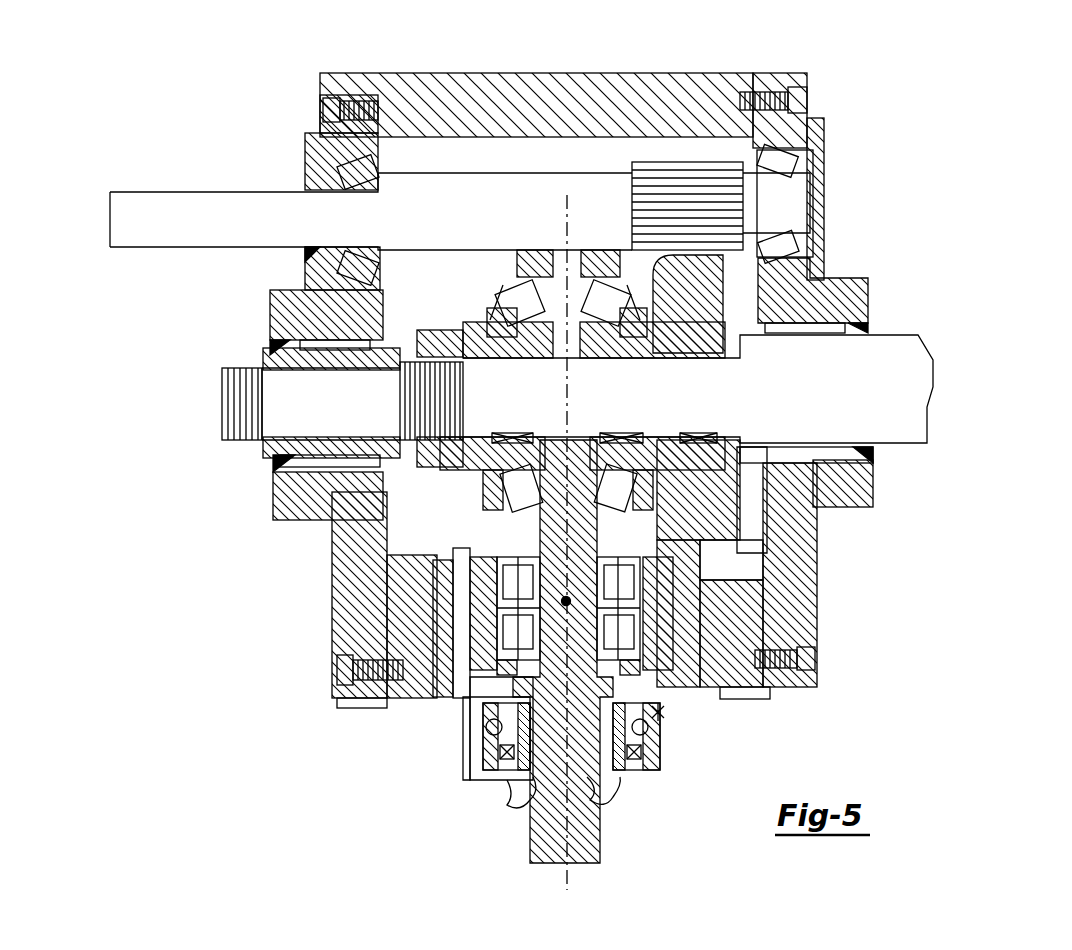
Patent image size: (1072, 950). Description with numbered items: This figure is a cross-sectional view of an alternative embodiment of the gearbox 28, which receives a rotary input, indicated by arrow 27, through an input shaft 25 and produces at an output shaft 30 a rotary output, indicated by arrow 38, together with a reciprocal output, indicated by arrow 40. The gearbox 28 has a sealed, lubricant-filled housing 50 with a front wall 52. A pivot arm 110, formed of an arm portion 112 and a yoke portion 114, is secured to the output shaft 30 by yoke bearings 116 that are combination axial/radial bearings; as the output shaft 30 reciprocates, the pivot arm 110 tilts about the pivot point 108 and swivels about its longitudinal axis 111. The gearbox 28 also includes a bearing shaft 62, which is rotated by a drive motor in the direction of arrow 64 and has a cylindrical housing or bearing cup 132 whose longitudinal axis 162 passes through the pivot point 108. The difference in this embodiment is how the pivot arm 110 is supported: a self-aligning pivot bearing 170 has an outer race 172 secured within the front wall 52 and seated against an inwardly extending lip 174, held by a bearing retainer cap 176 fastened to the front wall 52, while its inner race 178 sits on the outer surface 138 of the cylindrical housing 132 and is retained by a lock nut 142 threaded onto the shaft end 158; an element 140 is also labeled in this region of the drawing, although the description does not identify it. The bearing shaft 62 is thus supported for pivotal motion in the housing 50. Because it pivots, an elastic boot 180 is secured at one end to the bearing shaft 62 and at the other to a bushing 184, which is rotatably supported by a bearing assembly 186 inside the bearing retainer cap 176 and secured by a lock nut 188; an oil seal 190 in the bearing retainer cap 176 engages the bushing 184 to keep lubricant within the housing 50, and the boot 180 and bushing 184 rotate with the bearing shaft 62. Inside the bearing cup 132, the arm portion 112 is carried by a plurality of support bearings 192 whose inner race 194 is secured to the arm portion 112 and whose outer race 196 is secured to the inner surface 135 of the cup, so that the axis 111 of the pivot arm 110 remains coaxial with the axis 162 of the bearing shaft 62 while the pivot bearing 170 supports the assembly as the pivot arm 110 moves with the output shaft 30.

The input shaft 25 is at (230, 192).
The arrow indicating rotary input 27 is at (138, 270).
The gearbox 28 is at (827, 74).
The output shaft 30 is at (895, 350).
The arrow indicating rotary motion 38 is at (891, 478).
The arrow indicating reciprocal motion 40 is at (742, 387).
The housing 50 is at (769, 68).
The front wall 52 is at (400, 690).
The bearing shaft 62 is at (592, 820).
The arrow indicating rotation of bearing shaft 64 is at (560, 862).
The pivot point 108 is at (566, 598).
The pivot arm 110 is at (626, 530).
The longitudinal axis of pivot arm 111 is at (591, 470).
The arm portion 112 is at (652, 437).
The yoke portion 114 is at (543, 260).
The yoke bearings 116 is at (496, 298).
The cylindrical housing or bearing cup 132 is at (483, 700).
The inner surface 135 is at (697, 550).
The outer surface 138 is at (537, 665).
The hub 140 is at (505, 600).
The lock nut 142 is at (466, 655).
The shaft end 158 is at (585, 842).
The longitudinal axis of bearing shaft 162 is at (567, 882).
The pivot bearing 170 is at (473, 692).
The outer race 172 is at (443, 635).
The inwardly extending lip 174 is at (473, 597).
The bearing retainer cap 176 is at (490, 795).
The inner race 178 is at (462, 605).
The elastic boot 180 is at (620, 780).
The bushing 184 is at (672, 742).
The bearing assembly 186 is at (656, 713).
The lock nut 188 is at (662, 711).
The oil seal 190 is at (497, 795).
The support bearings 192 is at (702, 630).
The inner race 194 is at (692, 590).
The outer race 196 is at (760, 660).